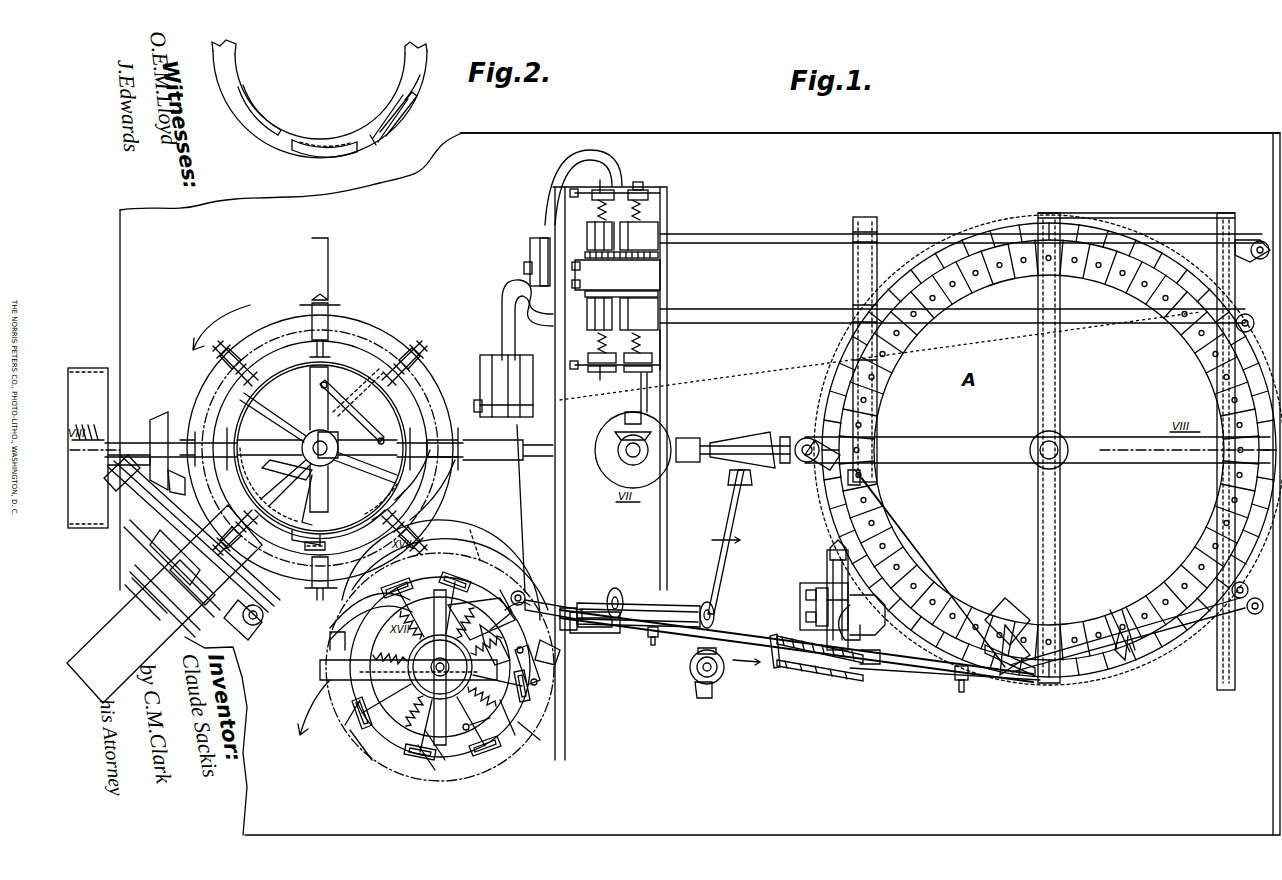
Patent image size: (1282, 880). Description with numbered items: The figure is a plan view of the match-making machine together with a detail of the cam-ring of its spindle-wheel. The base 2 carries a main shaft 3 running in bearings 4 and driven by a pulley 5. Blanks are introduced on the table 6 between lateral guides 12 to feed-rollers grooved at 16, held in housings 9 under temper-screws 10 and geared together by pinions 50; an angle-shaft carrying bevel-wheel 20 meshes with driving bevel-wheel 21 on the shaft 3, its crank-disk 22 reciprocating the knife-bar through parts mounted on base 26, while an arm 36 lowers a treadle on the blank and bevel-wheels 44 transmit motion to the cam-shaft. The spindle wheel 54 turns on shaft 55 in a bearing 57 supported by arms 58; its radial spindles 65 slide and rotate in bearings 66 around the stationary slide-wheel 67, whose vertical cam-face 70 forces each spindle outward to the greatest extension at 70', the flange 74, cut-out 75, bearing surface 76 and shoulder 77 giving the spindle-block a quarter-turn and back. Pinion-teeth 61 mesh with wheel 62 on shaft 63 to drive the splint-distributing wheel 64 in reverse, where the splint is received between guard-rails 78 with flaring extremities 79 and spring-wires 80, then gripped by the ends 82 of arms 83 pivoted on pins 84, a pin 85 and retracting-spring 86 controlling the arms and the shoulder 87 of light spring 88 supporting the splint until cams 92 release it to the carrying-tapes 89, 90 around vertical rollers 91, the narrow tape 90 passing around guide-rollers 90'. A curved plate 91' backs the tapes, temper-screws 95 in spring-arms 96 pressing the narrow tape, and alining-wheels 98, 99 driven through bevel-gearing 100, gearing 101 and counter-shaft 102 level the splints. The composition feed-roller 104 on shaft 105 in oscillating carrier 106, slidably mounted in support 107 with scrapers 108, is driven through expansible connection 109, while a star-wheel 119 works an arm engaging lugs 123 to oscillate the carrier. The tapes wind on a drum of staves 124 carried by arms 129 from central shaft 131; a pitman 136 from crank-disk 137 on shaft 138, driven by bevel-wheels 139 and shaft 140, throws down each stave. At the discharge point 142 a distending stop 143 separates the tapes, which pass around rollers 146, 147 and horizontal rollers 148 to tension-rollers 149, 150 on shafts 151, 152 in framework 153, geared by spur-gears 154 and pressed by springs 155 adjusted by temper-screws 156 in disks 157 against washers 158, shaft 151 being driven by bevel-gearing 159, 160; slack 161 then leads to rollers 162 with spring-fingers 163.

In FIG. 1, the base 2 is at (1078, 133).
In FIG. 1, the main shaft 3 is at (142, 440).
In FIG. 1, the bearings 4 is at (690, 462).
In FIG. 1, the pulley 5 is at (88, 370).
In FIG. 1, the table 6 is at (164, 604).
In FIG. 1, the housings 9 is at (165, 565).
In FIG. 1, the temper-screws 10 is at (168, 556).
In FIG. 1, the lateral guides 12 is at (125, 603).
In FIG. 1, the grooves 16 is at (160, 608).
In FIG. 1, the bevel-wheel 20 is at (172, 485).
In FIG. 1, the driving bevel-wheel 21 is at (160, 420).
In FIG. 1, the crank-disk 22 is at (115, 500).
In FIG. 1, the base 26 is at (140, 500).
In FIG. 1, the arm 36 is at (270, 478).
In FIG. 1, the bevel-wheels 44 is at (262, 610).
In FIG. 1, the toothed pinions 50 is at (242, 618).
In FIG. 1, the spindle wheel 54 is at (340, 316).
In FIG. 1, the shaft 55 is at (330, 452).
In FIG. 1, the bearing 57 is at (312, 440).
In FIG. 1, the arms 58 is at (312, 410).
In FIG. 1, the peripheral pinion-teeth 61 is at (440, 516).
In FIG. 1, the wheel 62 is at (480, 542).
In FIG. 1, the shaft 63 is at (425, 680).
In FIG. 1, the splint-distributing wheel 64 is at (505, 715).
In FIG. 1, the spindles 65 is at (240, 515).
In FIG. 1, the bearings 66 is at (222, 360).
In FIG. 2, the slide-wheel 67 is at (236, 70).
In FIG. 2, the vertical cam-face 70 is at (251, 120).
In FIG. 1, the vertical cam-face 70 is at (262, 485).
In FIG. 2, the point of greatest extension 70' is at (389, 134).
In FIG. 1, the point of greatest extension 70' is at (378, 502).
In FIG. 1, the upper flange 74 is at (330, 540).
In FIG. 2, the cut-out portion 75 is at (335, 152).
In FIG. 1, the cut-out portion 75 is at (305, 520).
In FIG. 2, the bearing surface of slide-wheel 76 is at (398, 112).
In FIG. 2, the shoulder 77 is at (420, 88).
In FIG. 1, the shoulder 77 is at (430, 482).
In FIG. 1, the annular guard-rails 78 is at (430, 578).
In FIG. 1, the flaring extremities 79 is at (370, 598).
In FIG. 1, the spring-wires 80 is at (345, 630).
In FIG. 1, the projecting ends 82 is at (360, 740).
In FIG. 1, the arms 83 is at (470, 722).
In FIG. 1, the pins 84 is at (352, 714).
In FIG. 1, the pin 85 is at (410, 750).
In FIG. 1, the retracting-spring 86 is at (472, 635).
In FIG. 1, the shoulder 87 is at (540, 676).
In FIG. 1, the light spring 88 is at (540, 690).
In FIG. 1, the carrying-tape 89 is at (760, 326).
In FIG. 1, the carrying-tape 90 is at (908, 473).
In FIG. 1, the guide-rollers 90' is at (579, 632).
In FIG. 1, the vertical rollers 91 is at (546, 586).
In FIG. 1, the outwardly-curved plate 91' is at (780, 640).
In FIG. 1, the stationary cams 92 is at (494, 588).
In FIG. 1, the temper-screws 95 is at (652, 648).
In FIG. 1, the spring-arms 96 is at (665, 603).
In FIG. 1, the alining-wheel 98 is at (598, 634).
In FIG. 1, the alining-wheel 99 is at (732, 638).
In FIG. 1, the bevel-gearing 100 is at (615, 588).
In FIG. 1, the gearing 101 is at (690, 682).
In FIG. 1, the counter-shaft 102 is at (732, 560).
In FIG. 1, the feed-roller 104 is at (842, 680).
In FIG. 1, the shaft 105 is at (816, 606).
In FIG. 1, the oscillating carrier 106 is at (827, 580).
In FIG. 1, the support 107 is at (870, 640).
In FIG. 1, the scrapers 108 is at (782, 660).
In FIG. 1, the expansible connection 109 is at (835, 545).
In FIG. 1, the star-wheel 119 is at (895, 672).
In FIG. 1, the lugs 123 is at (800, 592).
In FIG. 1, the vertical staves 124 is at (1020, 230).
In FIG. 1, the arms 129 is at (1037, 450).
In FIG. 1, the vertical central shaft 131 is at (1052, 446).
In FIG. 1, the pitman 136 is at (1022, 670).
In FIG. 1, the crank-disk 137 is at (1000, 675).
In FIG. 1, the shaft 138 is at (960, 590).
In FIG. 1, the bevel-wheels 139 is at (815, 462).
In FIG. 1, the shaft 140 is at (805, 440).
In FIG. 1, the point of discharge 142 is at (1118, 660).
In FIG. 1, the distending stop 143 is at (1130, 655).
In FIG. 1, the vertically-mounted roller 146 is at (1245, 615).
In FIG. 1, the vertically-mounted roller 147 is at (1255, 262).
In FIG. 1, the horizontal rollers 148 is at (855, 250).
In FIG. 1, the tension-roller 149 is at (658, 232).
In FIG. 1, the tension-roller 150 is at (590, 232).
In FIG. 1, the shaft 151 is at (647, 385).
In FIG. 1, the shaft 152 is at (604, 190).
In FIG. 1, the framework 153 is at (666, 348).
In FIG. 1, the spur-gears 154 is at (662, 282).
In FIG. 1, the springs 155 is at (645, 212).
In FIG. 1, the temper-screws 156 is at (648, 194).
In FIG. 1, the disks 157 is at (652, 368).
In FIG. 1, the washers 158 is at (595, 198).
In FIG. 1, the bevel-gearing 159 is at (620, 456).
In FIG. 1, the bevel-gearing 160 is at (655, 478).
In FIG. 1, the slack 161 is at (555, 160).
In FIG. 1, the rollers 162 is at (524, 266).
In FIG. 1, the spring-fingers 163 is at (530, 250).